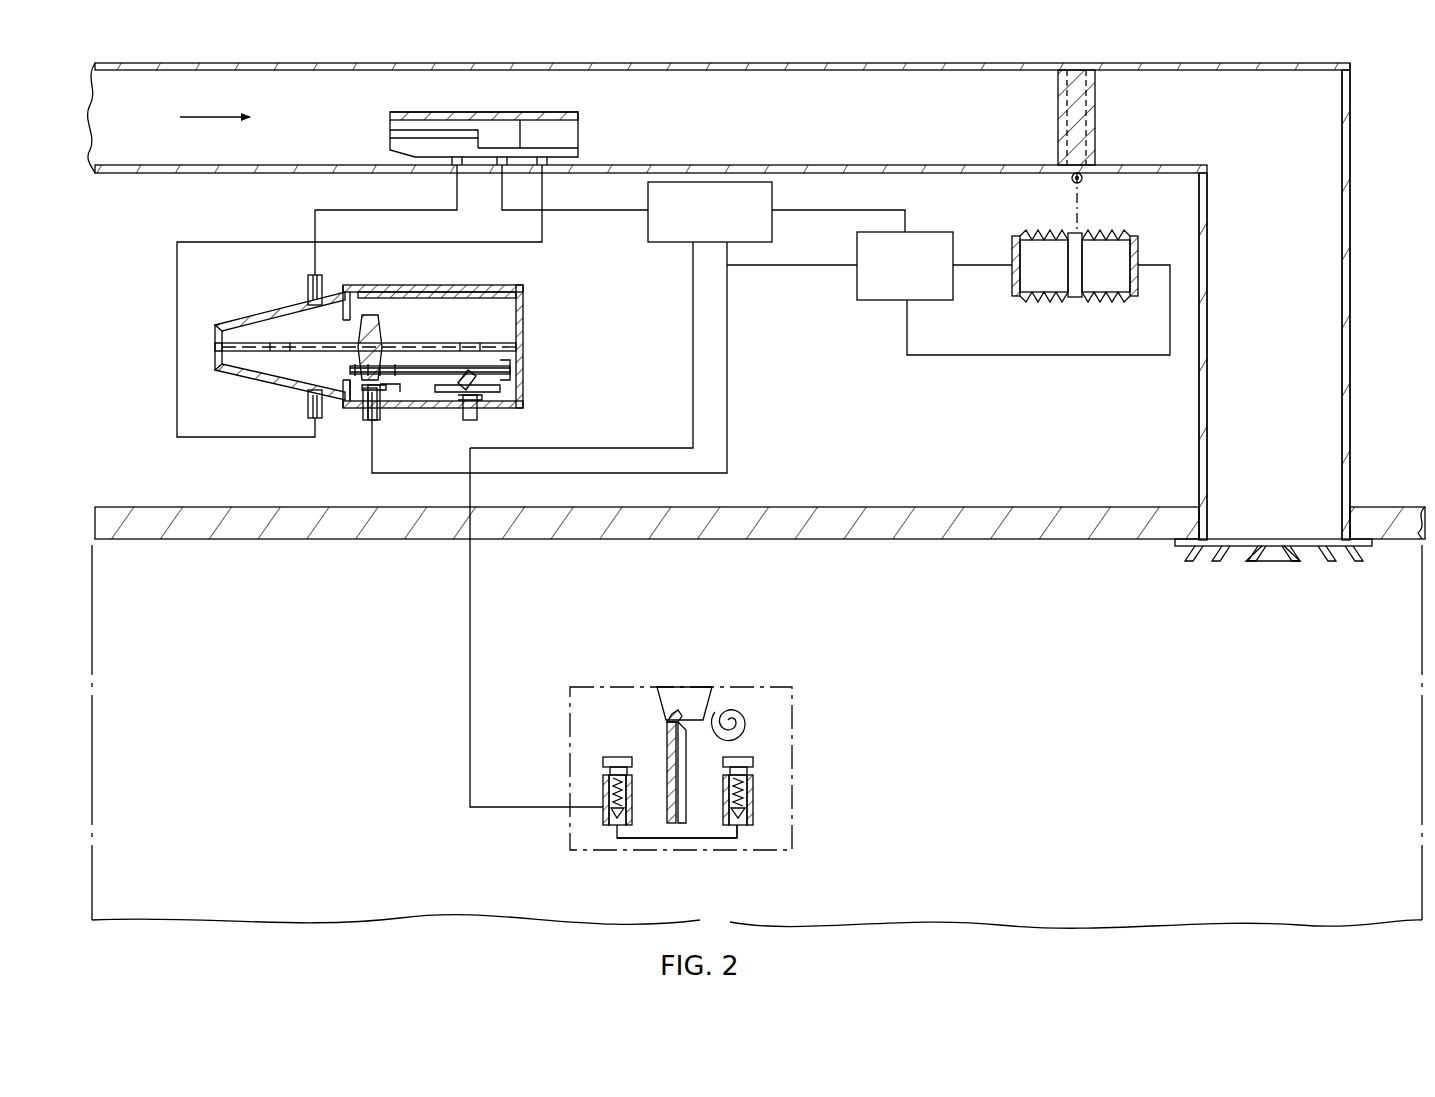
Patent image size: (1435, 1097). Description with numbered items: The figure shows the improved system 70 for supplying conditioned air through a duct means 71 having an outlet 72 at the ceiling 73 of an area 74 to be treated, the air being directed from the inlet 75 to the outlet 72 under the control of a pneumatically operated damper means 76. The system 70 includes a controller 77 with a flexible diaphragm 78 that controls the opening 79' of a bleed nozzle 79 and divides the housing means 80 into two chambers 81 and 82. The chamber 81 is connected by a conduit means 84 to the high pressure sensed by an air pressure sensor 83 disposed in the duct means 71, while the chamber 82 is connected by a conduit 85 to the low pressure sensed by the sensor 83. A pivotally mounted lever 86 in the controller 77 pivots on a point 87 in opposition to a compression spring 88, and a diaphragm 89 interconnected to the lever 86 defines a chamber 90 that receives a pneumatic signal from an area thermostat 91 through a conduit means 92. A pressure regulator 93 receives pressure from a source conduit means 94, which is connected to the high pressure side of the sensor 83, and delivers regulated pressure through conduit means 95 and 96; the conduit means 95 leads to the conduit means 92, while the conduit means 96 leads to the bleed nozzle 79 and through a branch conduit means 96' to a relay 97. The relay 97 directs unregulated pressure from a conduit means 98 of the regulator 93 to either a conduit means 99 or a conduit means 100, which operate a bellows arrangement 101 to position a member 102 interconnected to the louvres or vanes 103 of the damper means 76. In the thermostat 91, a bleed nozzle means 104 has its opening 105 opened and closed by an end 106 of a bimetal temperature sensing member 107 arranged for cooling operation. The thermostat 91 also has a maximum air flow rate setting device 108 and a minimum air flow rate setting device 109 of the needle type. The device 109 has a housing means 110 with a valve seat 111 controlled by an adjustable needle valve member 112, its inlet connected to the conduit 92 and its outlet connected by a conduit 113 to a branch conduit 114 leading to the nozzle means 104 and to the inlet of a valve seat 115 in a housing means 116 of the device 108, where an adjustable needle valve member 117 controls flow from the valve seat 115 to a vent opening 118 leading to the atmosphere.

The system 70 is at (1370, 97).
The duct means 71 is at (1352, 300).
The outlet 72 is at (1222, 548).
The ceiling 73 is at (960, 507).
The area 74 is at (1050, 757).
The inlet 75 is at (97, 63).
The pneumatically operated damper means 76 is at (1097, 225).
The controller 77 is at (527, 303).
The flexible diaphragm 78 is at (492, 343).
The bleed nozzle 79 is at (332, 429).
The opening 79' is at (335, 384).
The housing means 80 is at (458, 290).
The chamber 81 is at (278, 330).
The chamber 82 is at (268, 368).
The air pressure sensor 83 is at (507, 108).
The conduit means 84 is at (352, 210).
The conduit 85 is at (177, 313).
The pivotally mounted lever 86 is at (395, 396).
The point 87 is at (507, 371).
The compression spring 88 is at (440, 375).
The diaphragm 89 is at (455, 396).
The chamber 90 is at (480, 400).
The area thermostat 91 is at (688, 687).
The conduit means 92 is at (470, 633).
The pressure regulator 93 is at (774, 200).
The source conduit means 94 is at (616, 212).
The conduit means 95 is at (693, 330).
The conduit means 96 is at (583, 357).
The branch conduit means 96' is at (792, 282).
The relay 97 is at (857, 282).
The conduit means 98 is at (865, 210).
The conduit means 99 is at (973, 265).
The conduit means 100 is at (1050, 357).
The bellows arrangement 101 is at (1040, 300).
The member 102 is at (1085, 268).
The louvres or vanes 103 is at (1095, 125).
The bleed nozzle means 104 is at (667, 755).
The opening 105 is at (670, 728).
The end 106 is at (662, 700).
The bimetal temperature sensing member 107 is at (703, 718).
The maximum air flow rate setting device 108 is at (762, 770).
The minimum air flow rate setting device 109 is at (596, 767).
The housing means 110 is at (603, 795).
The valve seat 111 is at (606, 818).
The adjustable needle valve member 112 is at (603, 778).
The conduit 113 is at (655, 840).
The branch conduit 114 is at (680, 838).
The valve seat 115 is at (750, 820).
The housing means 116 is at (753, 796).
The adjustable needle valve member 117 is at (753, 778).
The vent opening 118 is at (753, 810).